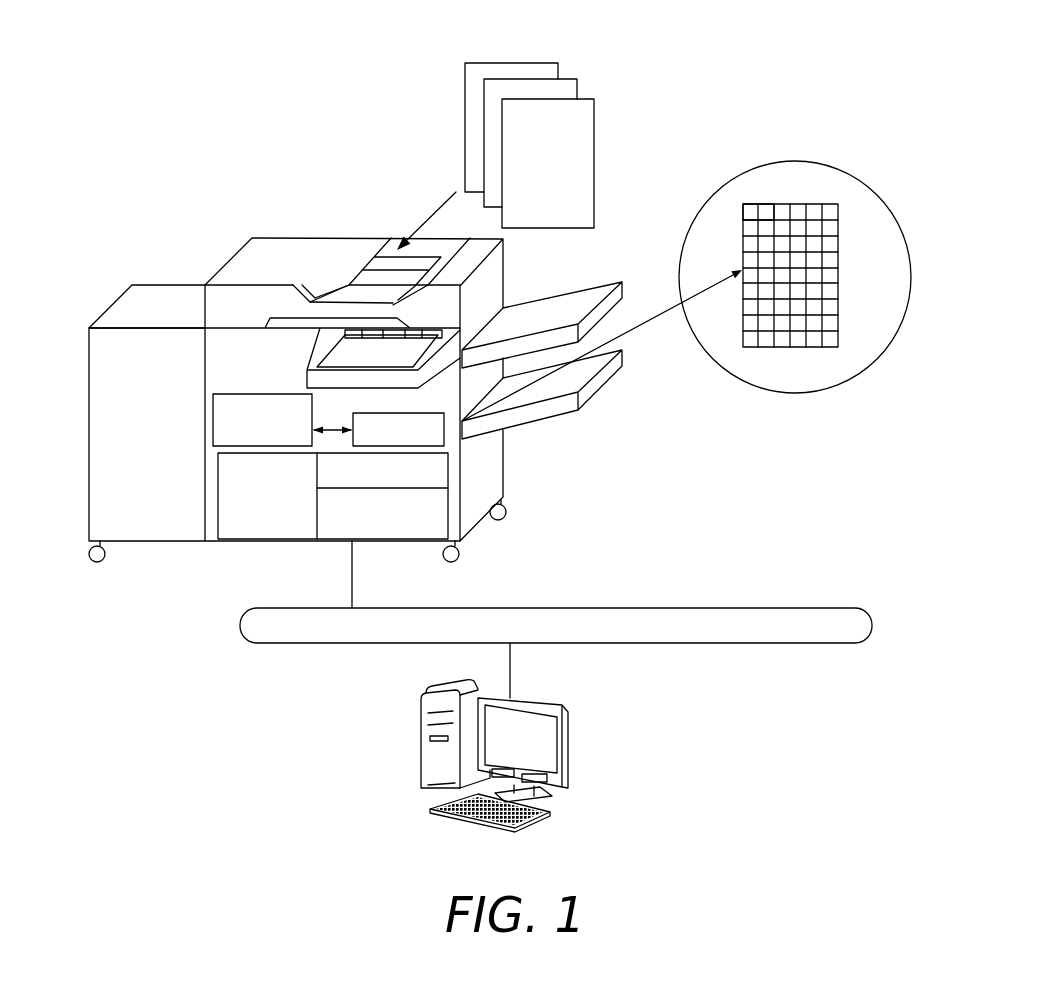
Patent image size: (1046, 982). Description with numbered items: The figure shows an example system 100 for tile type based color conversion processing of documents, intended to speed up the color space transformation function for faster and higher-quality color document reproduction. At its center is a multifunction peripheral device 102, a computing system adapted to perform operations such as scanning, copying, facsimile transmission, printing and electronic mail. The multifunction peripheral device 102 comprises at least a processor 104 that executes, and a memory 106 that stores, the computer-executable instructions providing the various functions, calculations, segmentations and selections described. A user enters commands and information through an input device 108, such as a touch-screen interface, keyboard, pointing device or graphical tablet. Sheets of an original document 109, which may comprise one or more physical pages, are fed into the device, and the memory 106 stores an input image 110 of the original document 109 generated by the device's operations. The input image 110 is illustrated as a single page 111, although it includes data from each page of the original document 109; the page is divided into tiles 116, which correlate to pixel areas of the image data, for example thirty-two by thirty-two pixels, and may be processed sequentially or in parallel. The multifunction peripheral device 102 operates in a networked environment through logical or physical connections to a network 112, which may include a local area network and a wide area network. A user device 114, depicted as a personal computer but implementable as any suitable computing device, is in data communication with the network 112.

The system 100 is at (187, 212).
The multifunction peripheral device 102 is at (317, 252).
The processor 104 is at (273, 393).
The memory 106 is at (403, 413).
The input device 108 is at (348, 353).
The original document 109 is at (594, 60).
The input image 110 is at (845, 382).
The single page 111 is at (853, 257).
The network 112 is at (657, 608).
The user device 114 is at (550, 703).
The tiles 116 is at (767, 210).